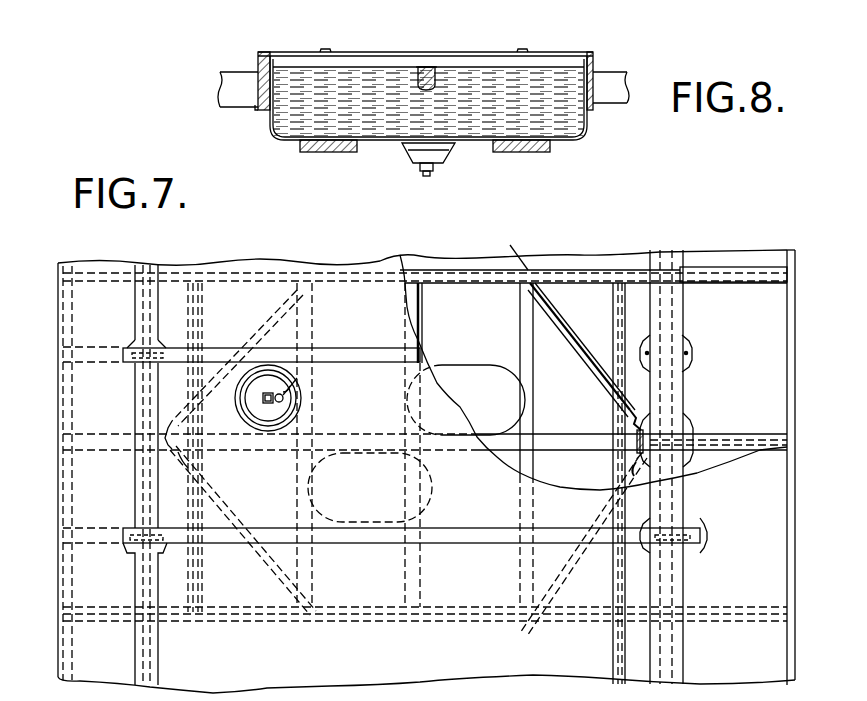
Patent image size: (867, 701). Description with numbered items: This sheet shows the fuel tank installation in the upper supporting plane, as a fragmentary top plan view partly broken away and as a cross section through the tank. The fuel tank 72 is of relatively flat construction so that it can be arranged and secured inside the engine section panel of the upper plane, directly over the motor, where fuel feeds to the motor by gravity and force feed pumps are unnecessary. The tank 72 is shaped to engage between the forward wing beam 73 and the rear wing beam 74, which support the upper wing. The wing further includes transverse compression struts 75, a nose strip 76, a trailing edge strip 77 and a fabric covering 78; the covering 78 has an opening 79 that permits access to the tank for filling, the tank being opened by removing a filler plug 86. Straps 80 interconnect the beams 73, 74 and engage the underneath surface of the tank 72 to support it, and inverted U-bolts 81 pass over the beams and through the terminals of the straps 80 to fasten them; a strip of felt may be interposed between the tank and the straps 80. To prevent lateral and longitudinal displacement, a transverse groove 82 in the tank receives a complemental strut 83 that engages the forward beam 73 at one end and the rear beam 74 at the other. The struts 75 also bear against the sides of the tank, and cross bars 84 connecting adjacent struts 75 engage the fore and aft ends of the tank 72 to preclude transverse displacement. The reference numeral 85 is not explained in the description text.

In FIG. 8, the fuel tank 72 is at (587, 125).
In FIG. 7, the fuel tank 72 is at (545, 337).
In FIG. 7, the wing beam 73 is at (145, 276).
In FIG. 7, the wing beam 74 is at (683, 303).
In FIG. 7, the transverse compression strut 75 is at (592, 277).
In FIG. 7, the nose strip 76 is at (58, 303).
In FIG. 7, the trailing edge strip 77 is at (787, 343).
In FIG. 7, the fabric covering 78 is at (438, 390).
In FIG. 7, the opening 79 is at (283, 367).
In FIG. 8, the strap 80 is at (525, 152).
In FIG. 7, the inverted U-bolt 81 is at (692, 352).
In FIG. 8, the transverse groove 82 is at (424, 67).
In FIG. 8, the strut 83 is at (417, 70).
In FIG. 7, the strut 83 is at (578, 441).
In FIG. 8, the cross bar 84 is at (621, 72).
In FIG. 7, the cross bar 84 is at (630, 288).
In FIG. 8, the pad 85 is at (550, 143).
In FIG. 7, the filler plug 86 is at (267, 413).